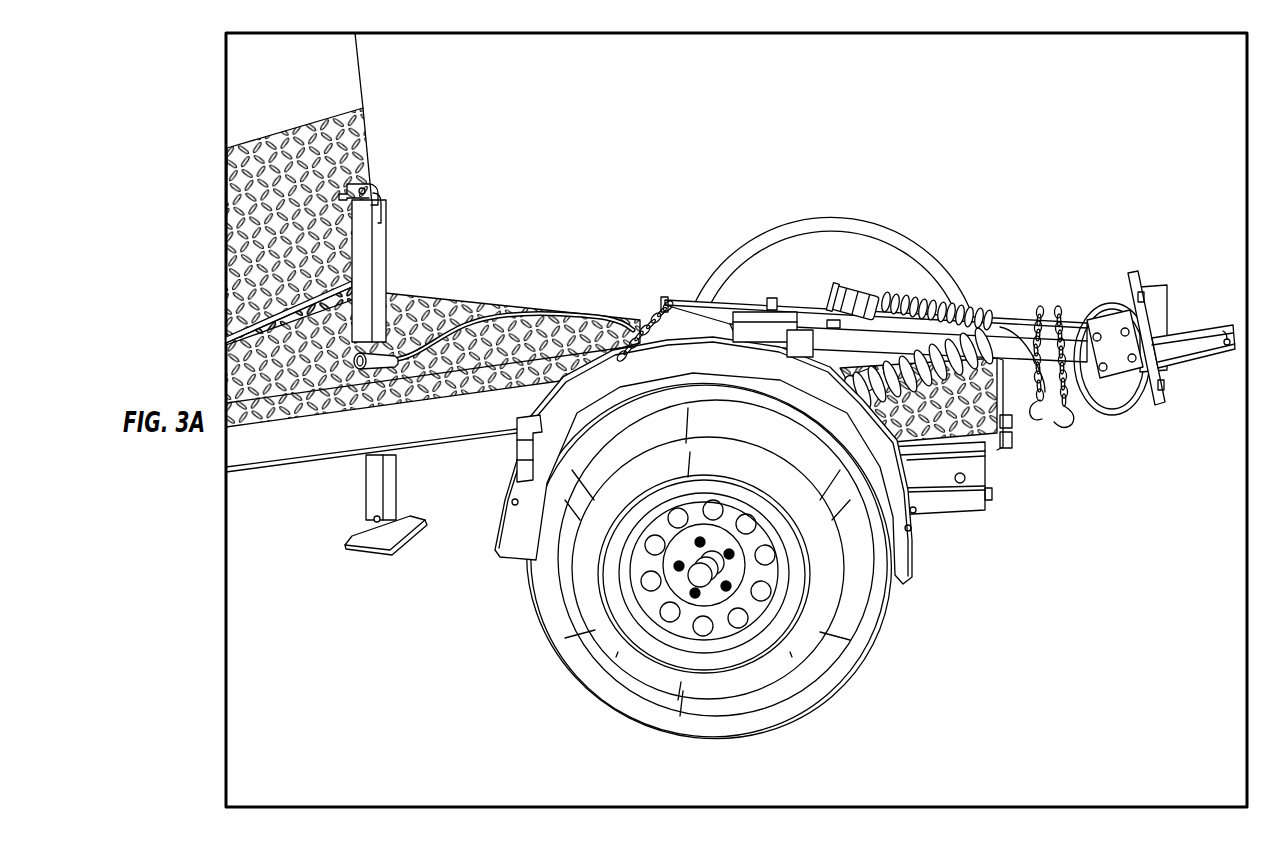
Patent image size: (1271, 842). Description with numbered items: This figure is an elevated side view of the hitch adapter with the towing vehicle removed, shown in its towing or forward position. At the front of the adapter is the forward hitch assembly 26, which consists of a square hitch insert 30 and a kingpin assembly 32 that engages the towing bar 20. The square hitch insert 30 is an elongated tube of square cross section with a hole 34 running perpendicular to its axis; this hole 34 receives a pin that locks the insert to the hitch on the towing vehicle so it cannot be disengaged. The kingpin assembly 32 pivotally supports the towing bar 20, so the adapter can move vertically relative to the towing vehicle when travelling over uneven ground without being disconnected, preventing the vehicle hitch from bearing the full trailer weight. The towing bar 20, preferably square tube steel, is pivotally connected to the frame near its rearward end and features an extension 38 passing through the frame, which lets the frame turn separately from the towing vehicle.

The towing bar 20 is at (1025, 325).
The forward hitch assembly 26 is at (1123, 310).
The square hitch insert 30 is at (1200, 353).
The kingpin assembly 32 is at (1117, 355).
The hole 34 is at (1223, 335).
The extension 38 is at (822, 310).